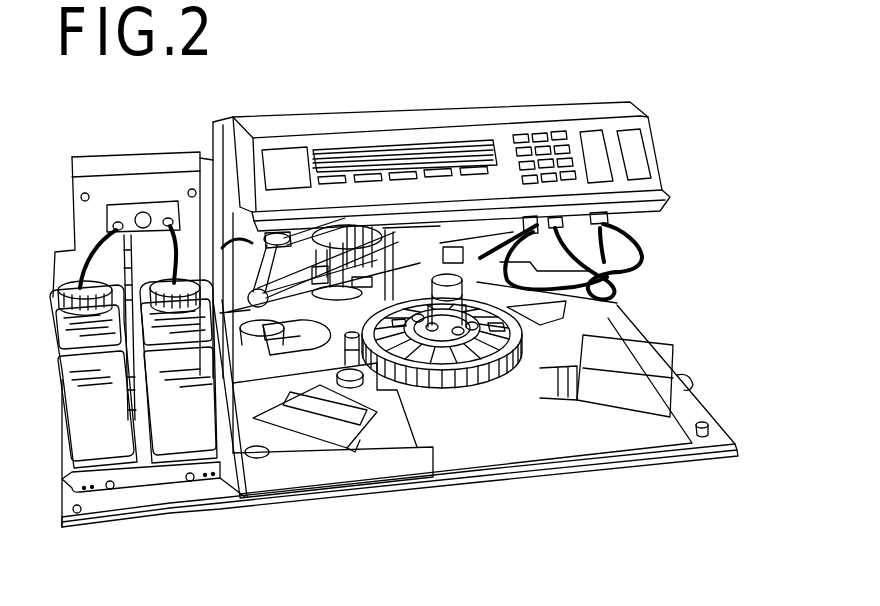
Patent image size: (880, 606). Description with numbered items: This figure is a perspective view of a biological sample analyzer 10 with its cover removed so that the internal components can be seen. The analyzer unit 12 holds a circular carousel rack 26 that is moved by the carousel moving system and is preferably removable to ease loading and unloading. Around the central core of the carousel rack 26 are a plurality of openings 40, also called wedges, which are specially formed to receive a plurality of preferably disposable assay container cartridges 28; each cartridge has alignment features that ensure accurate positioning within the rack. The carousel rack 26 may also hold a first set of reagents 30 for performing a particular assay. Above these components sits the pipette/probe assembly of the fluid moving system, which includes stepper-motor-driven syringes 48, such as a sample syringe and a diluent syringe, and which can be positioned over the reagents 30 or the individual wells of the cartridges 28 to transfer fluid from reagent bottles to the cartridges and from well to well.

The biological sample analyzer 10 is at (722, 228).
The analyzer unit 12 is at (482, 448).
The carousel rack 26 is at (477, 394).
The assay container cartridges 28 is at (392, 300).
The first set of reagents 30 is at (490, 329).
The openings 40 is at (507, 344).
The syringes 48 is at (285, 245).